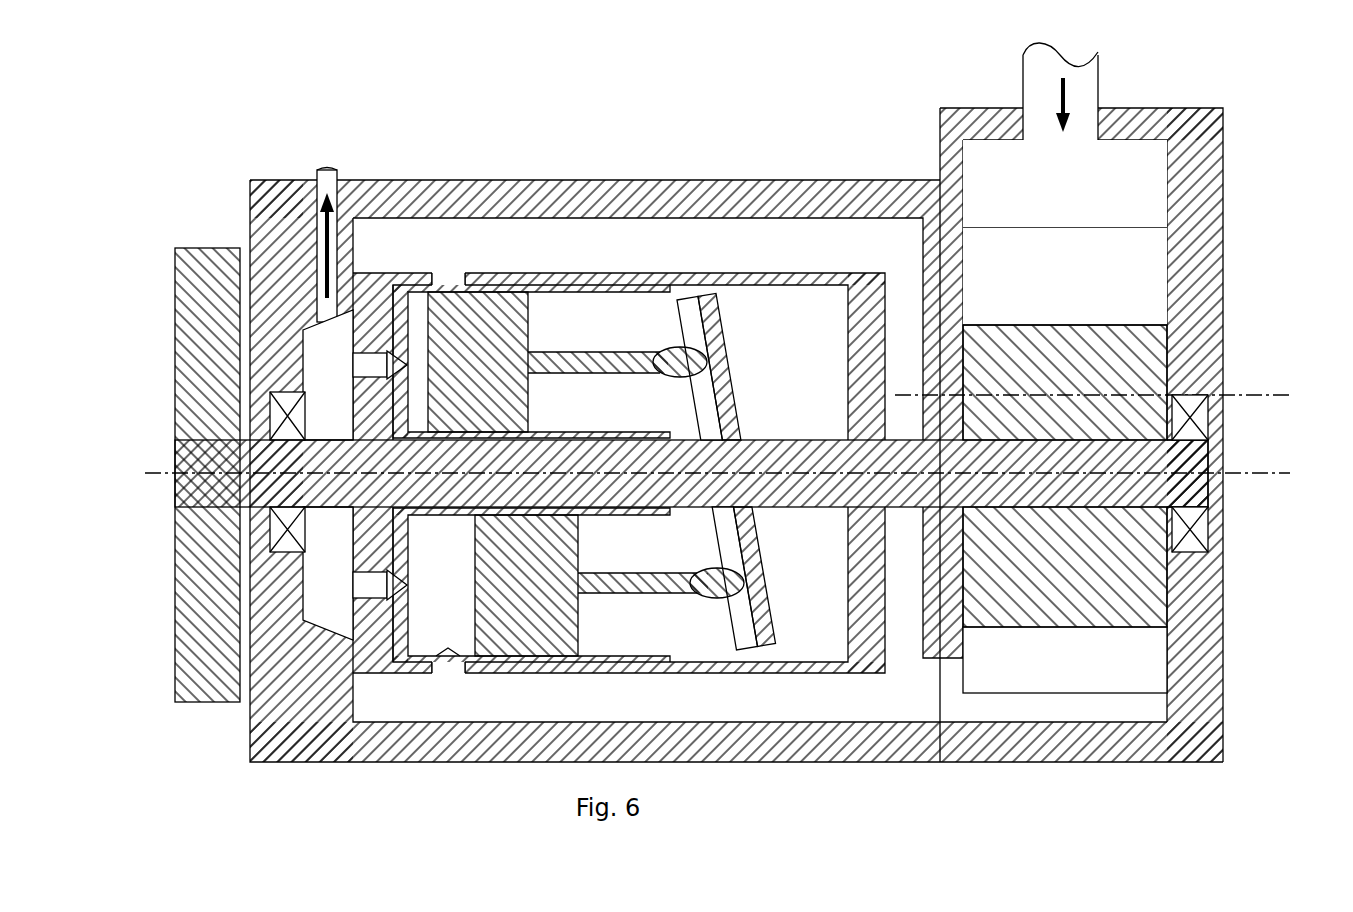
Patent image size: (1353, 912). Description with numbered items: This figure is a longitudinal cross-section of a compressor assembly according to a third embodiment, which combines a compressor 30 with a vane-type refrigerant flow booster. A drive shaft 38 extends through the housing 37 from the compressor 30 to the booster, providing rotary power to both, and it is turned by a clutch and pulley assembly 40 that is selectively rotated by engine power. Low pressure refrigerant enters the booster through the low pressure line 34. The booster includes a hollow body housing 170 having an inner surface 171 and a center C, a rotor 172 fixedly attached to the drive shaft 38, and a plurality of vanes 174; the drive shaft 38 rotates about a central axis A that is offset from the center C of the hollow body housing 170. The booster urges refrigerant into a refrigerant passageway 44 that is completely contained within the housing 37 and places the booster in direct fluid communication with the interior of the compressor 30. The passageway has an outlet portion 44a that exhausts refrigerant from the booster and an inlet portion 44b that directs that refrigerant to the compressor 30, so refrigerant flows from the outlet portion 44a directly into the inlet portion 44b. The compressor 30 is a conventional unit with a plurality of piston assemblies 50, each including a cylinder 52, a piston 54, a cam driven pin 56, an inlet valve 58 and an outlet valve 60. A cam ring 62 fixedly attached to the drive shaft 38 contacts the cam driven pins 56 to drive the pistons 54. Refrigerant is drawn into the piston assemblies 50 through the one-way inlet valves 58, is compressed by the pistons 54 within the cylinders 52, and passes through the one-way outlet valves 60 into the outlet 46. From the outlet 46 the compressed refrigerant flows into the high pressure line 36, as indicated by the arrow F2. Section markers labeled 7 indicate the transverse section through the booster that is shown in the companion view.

The compressor 30 is at (690, 177).
The low pressure line 34 is at (1032, 90).
The high pressure line 36 is at (333, 170).
The housing 37 is at (563, 177).
The drive shaft 38 is at (768, 452).
The clutch and pulley assembly 40 is at (187, 257).
The refrigerant passageway 44 is at (740, 790).
The outlet portion 44a is at (958, 705).
The inlet portion 44b is at (750, 700).
The outlet 46 is at (300, 352).
The piston assemblies 50 is at (592, 270).
The cylinder 52 is at (580, 288).
The piston 54 is at (510, 400).
The cam driven pin 56 is at (608, 367).
The inlet valve 58 is at (448, 280).
The outlet valve 60 is at (390, 363).
The cam ring 62 is at (745, 557).
The hollow body housing 170 is at (1200, 288).
The inner surface 171 is at (1147, 170).
The rotor 172 is at (1110, 577).
The vanes 174 is at (1147, 270).
The section line 7 is at (1168, 108).
The central axis A is at (1258, 472).
The center C is at (1258, 393).
The arrow F2 is at (323, 223).